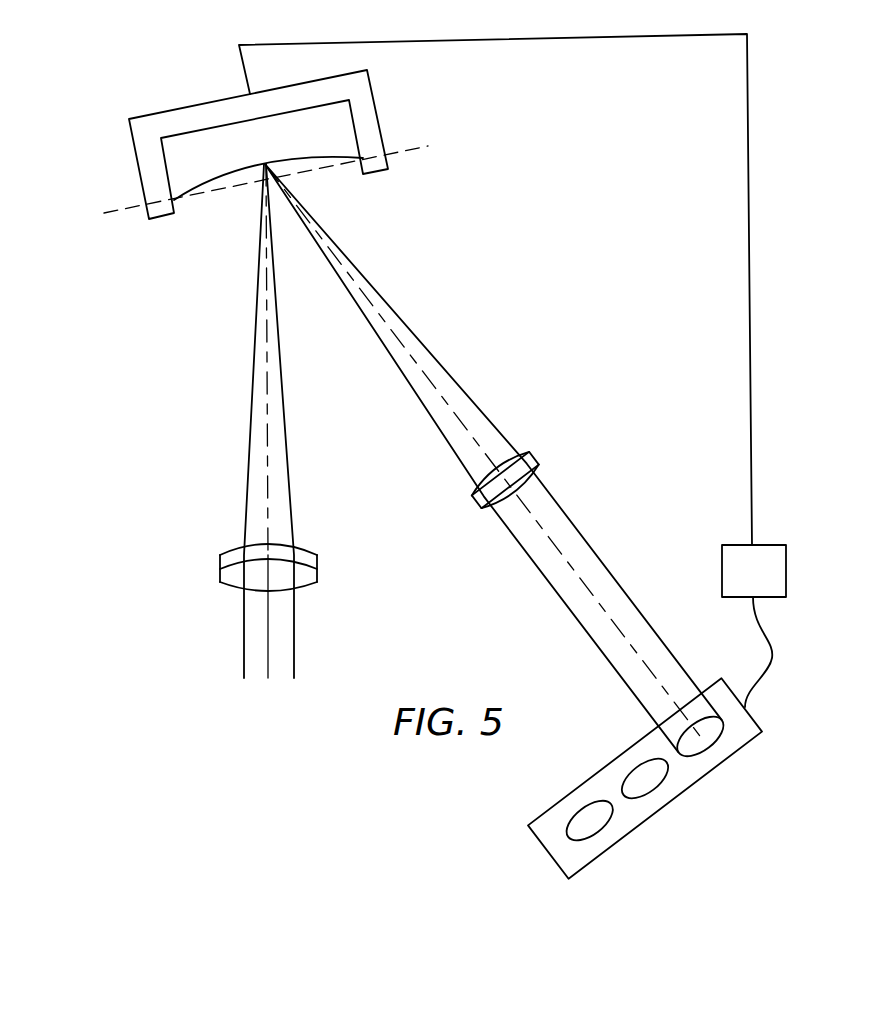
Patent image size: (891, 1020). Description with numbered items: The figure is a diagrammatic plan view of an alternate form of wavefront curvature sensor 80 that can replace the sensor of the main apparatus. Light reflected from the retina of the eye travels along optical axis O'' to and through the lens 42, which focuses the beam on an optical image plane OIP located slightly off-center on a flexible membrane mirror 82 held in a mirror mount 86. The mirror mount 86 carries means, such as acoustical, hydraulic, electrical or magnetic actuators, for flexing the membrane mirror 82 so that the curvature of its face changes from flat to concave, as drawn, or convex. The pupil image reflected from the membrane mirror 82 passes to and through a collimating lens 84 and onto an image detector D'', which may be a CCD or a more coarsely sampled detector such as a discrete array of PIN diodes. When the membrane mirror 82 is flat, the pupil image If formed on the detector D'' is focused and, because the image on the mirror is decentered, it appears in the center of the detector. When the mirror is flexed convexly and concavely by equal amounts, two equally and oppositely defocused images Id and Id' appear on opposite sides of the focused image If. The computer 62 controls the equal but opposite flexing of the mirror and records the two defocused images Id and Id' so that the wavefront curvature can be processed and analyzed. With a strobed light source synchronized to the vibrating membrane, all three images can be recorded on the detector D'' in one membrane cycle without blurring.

The mirror mount 86 is at (166, 110).
The flexible membrane mirror 82 is at (197, 183).
The optical image plane OIP is at (410, 152).
The wavefront sensor 80 is at (185, 359).
The collimating lens 84 is at (525, 452).
The lens 42 is at (220, 561).
The optical axis O'' is at (300, 421).
The computer 62 is at (786, 570).
The image detector D'' is at (681, 778).
The defocused image Id is at (722, 764).
The focused pupil image If is at (647, 797).
The defocused image Id' is at (597, 847).